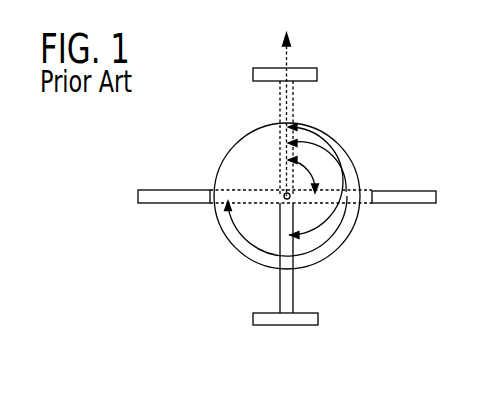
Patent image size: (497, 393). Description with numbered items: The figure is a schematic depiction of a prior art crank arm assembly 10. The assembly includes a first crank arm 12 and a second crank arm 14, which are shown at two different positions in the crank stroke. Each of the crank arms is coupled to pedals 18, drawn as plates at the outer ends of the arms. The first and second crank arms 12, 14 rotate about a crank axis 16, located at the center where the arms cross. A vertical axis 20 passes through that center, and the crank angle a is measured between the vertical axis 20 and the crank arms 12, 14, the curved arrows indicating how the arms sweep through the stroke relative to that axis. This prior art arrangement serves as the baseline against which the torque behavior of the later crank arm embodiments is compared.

The crank arm assembly 10 is at (133, 188).
The first crank arm 12 is at (357, 190).
The second crank arm 14 is at (287, 126).
The crank axis 16 is at (284, 197).
The pedals 18 is at (263, 68).
The vertical axis 20 is at (294, 52).
The crank angle a is at (326, 150).